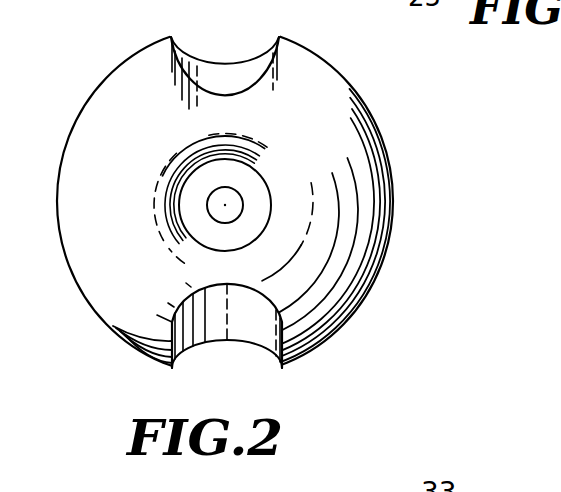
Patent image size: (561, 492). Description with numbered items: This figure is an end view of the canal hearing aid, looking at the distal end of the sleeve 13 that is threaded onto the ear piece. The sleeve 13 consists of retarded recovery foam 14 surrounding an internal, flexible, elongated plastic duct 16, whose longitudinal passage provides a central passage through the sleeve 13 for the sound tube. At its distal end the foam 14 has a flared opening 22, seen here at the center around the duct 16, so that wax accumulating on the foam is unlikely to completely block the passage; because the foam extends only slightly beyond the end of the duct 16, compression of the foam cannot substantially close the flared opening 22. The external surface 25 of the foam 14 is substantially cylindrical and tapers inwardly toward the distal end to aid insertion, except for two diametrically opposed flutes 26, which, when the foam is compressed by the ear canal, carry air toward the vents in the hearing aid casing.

The sleeve 13 is at (134, 52).
The retarded recovery foam 14 is at (110, 93).
The duct 16 is at (250, 183).
The flared opening 22 is at (189, 204).
The external surface 25 is at (385, 152).
The flutes 26 is at (254, 82).